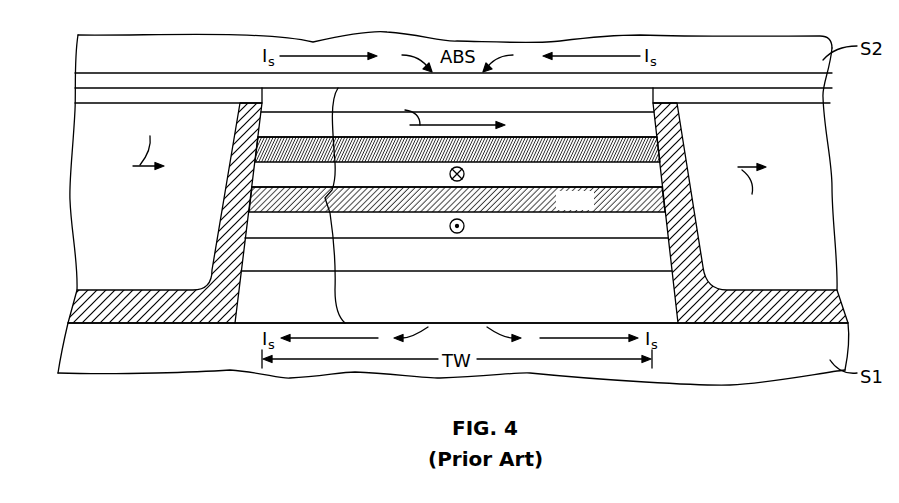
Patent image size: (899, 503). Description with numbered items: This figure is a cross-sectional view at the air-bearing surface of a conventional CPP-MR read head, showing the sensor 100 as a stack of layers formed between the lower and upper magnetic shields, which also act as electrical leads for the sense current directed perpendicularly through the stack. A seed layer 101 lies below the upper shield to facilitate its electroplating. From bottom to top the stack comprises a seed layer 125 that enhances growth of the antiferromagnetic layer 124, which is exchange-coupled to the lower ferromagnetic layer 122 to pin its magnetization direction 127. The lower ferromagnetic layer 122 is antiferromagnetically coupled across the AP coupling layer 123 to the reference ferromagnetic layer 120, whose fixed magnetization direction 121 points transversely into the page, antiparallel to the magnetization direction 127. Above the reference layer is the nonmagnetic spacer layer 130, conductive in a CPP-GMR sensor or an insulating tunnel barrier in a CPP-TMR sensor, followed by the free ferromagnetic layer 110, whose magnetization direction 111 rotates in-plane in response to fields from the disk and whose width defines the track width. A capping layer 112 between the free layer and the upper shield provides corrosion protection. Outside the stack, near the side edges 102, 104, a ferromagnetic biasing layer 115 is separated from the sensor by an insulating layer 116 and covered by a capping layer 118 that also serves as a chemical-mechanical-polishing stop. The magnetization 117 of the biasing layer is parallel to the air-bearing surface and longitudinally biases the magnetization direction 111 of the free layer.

The sensor 100 is at (318, 205).
The seed layer 101 is at (660, 80).
The side edge 102 is at (230, 318).
The side edge 104 is at (680, 315).
The free ferromagnetic layer 110 is at (457, 127).
The magnetization direction 111 is at (441, 115).
The capping layer 112 is at (457, 102).
The ferromagnetic biasing layer 115 is at (80, 212).
The insulating layer 116 is at (83, 310).
The magnetization 117 is at (451, 167).
The capping layer 118 is at (80, 97).
The reference ferromagnetic layer 120 is at (457, 177).
The magnetization direction 121 is at (465, 174).
The lower ferromagnetic layer 122 is at (456, 227).
The AP coupling layer 123 is at (457, 199).
The antiferromagnetic layer 124 is at (456, 258).
The seed layer 125 is at (456, 307).
The magnetization direction 127 is at (465, 226).
The nonmagnetic spacer layer 130 is at (457, 149).